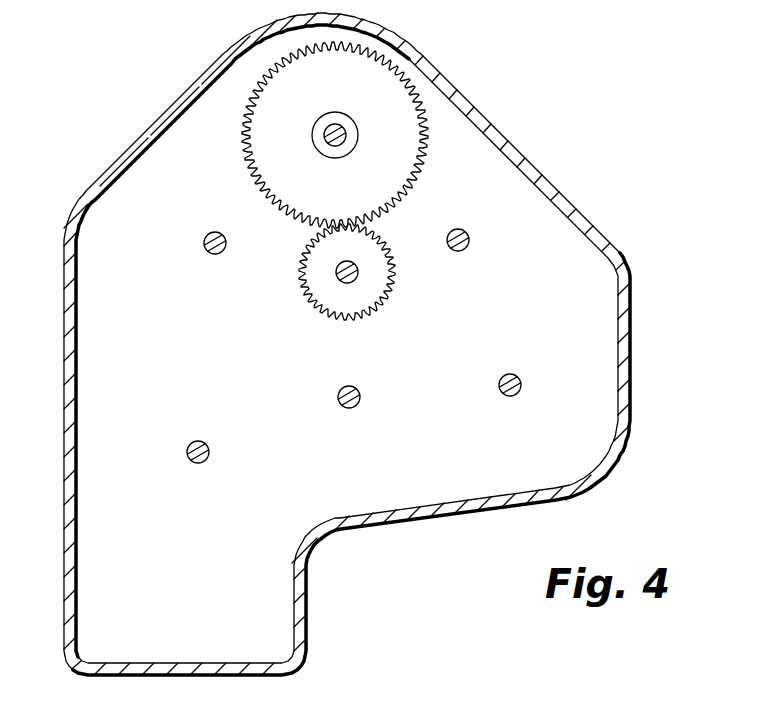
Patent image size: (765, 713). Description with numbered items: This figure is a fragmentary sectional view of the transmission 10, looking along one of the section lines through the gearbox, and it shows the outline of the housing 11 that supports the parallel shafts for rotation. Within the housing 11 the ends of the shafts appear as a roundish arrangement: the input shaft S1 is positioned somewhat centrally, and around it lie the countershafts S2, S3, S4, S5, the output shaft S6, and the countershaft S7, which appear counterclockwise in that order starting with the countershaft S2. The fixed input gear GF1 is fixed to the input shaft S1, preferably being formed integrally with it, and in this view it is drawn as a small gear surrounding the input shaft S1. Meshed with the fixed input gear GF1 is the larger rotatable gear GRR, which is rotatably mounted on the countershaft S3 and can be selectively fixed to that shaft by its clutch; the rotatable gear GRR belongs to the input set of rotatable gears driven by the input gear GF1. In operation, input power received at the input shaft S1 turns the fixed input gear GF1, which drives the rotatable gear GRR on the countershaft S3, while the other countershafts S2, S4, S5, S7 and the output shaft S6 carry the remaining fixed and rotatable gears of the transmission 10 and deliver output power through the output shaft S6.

The transmission 10 is at (347, 344).
The housing 11 is at (471, 510).
The rotatable gear GRR is at (249, 172).
The fixed input gear GF1 is at (309, 292).
The input shaft S1 is at (355, 281).
The countershaft S2 is at (459, 251).
The countershaft S3 is at (330, 145).
The countershaft S4 is at (208, 252).
The countershaft S5 is at (198, 463).
The output shaft S6 is at (342, 406).
The countershaft S7 is at (510, 396).